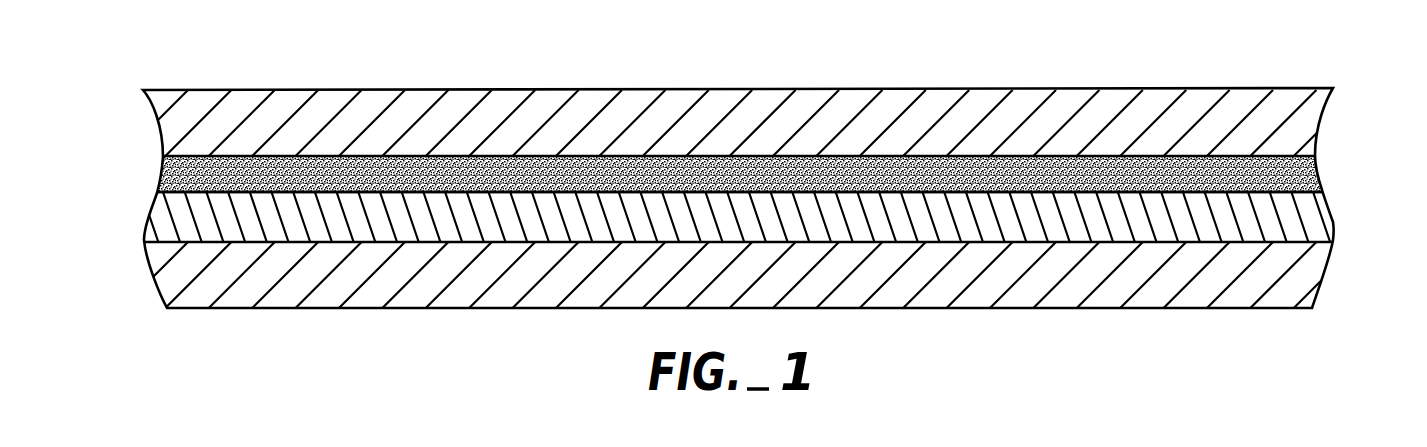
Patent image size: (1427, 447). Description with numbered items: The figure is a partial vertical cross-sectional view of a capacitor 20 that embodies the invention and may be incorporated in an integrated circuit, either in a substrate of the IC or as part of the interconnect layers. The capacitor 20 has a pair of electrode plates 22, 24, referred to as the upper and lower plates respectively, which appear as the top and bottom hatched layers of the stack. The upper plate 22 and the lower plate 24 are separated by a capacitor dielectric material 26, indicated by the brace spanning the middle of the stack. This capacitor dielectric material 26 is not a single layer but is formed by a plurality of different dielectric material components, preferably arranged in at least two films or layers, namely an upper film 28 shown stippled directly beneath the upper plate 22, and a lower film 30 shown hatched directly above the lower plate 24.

The capacitor 20 is at (1266, 70).
The upper electrode plate 22 is at (258, 103).
The lower electrode plate 24 is at (322, 295).
The capacitor dielectric material 26 is at (115, 160).
The upper film 28 is at (1322, 176).
The lower film 30 is at (1333, 226).